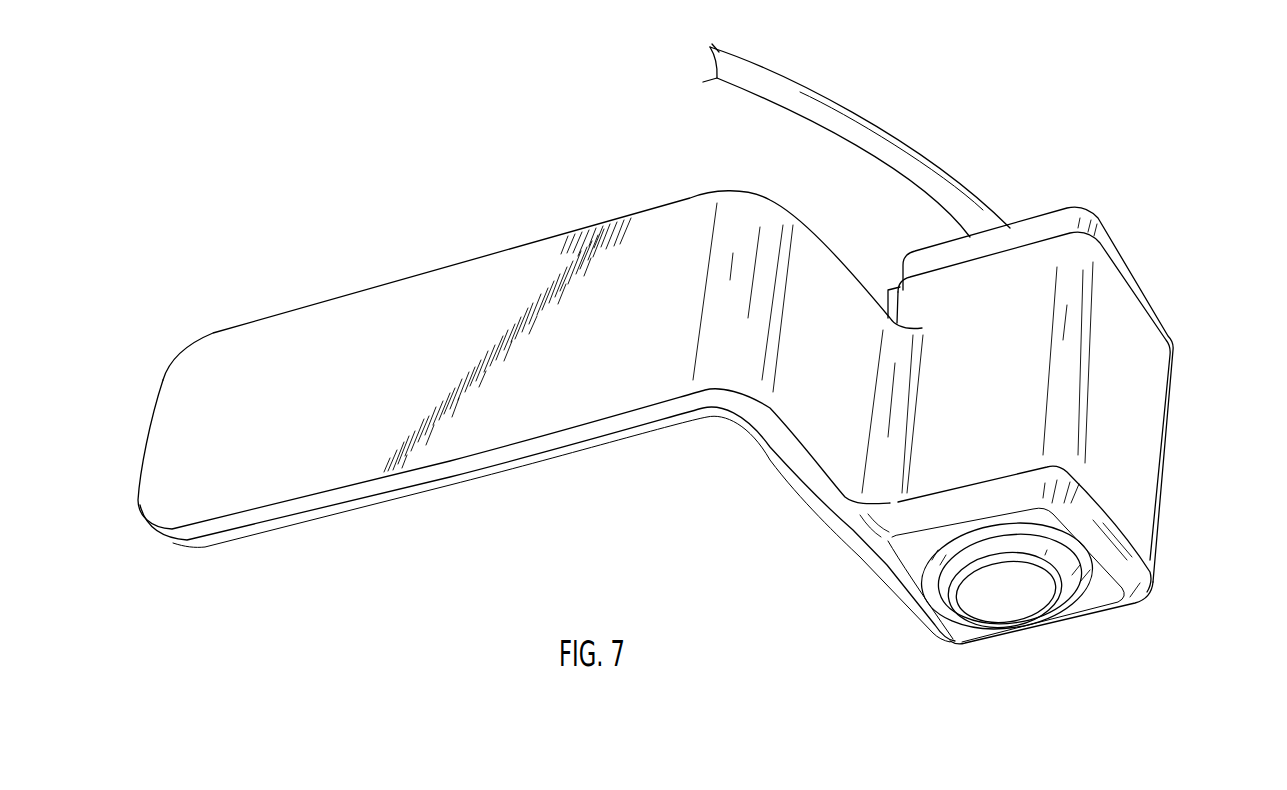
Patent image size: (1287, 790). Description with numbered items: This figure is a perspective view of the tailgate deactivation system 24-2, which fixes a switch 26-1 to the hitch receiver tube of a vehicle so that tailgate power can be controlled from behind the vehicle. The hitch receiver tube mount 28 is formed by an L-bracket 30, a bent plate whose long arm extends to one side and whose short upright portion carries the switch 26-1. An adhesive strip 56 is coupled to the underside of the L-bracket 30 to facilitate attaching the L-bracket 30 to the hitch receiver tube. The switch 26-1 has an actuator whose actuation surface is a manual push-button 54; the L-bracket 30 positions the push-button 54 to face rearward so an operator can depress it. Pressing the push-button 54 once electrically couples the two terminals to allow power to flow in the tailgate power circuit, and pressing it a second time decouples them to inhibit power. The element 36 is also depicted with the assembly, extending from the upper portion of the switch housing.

The tailgate deactivation system 24-2 is at (1104, 185).
The switch 26-1 is at (1132, 473).
The hitch receiver tube mount 28 is at (383, 320).
The L-bracket 30 is at (508, 250).
The strap 36 is at (860, 135).
The manual push-button 54 is at (1012, 602).
The adhesive strip 56 is at (353, 508).